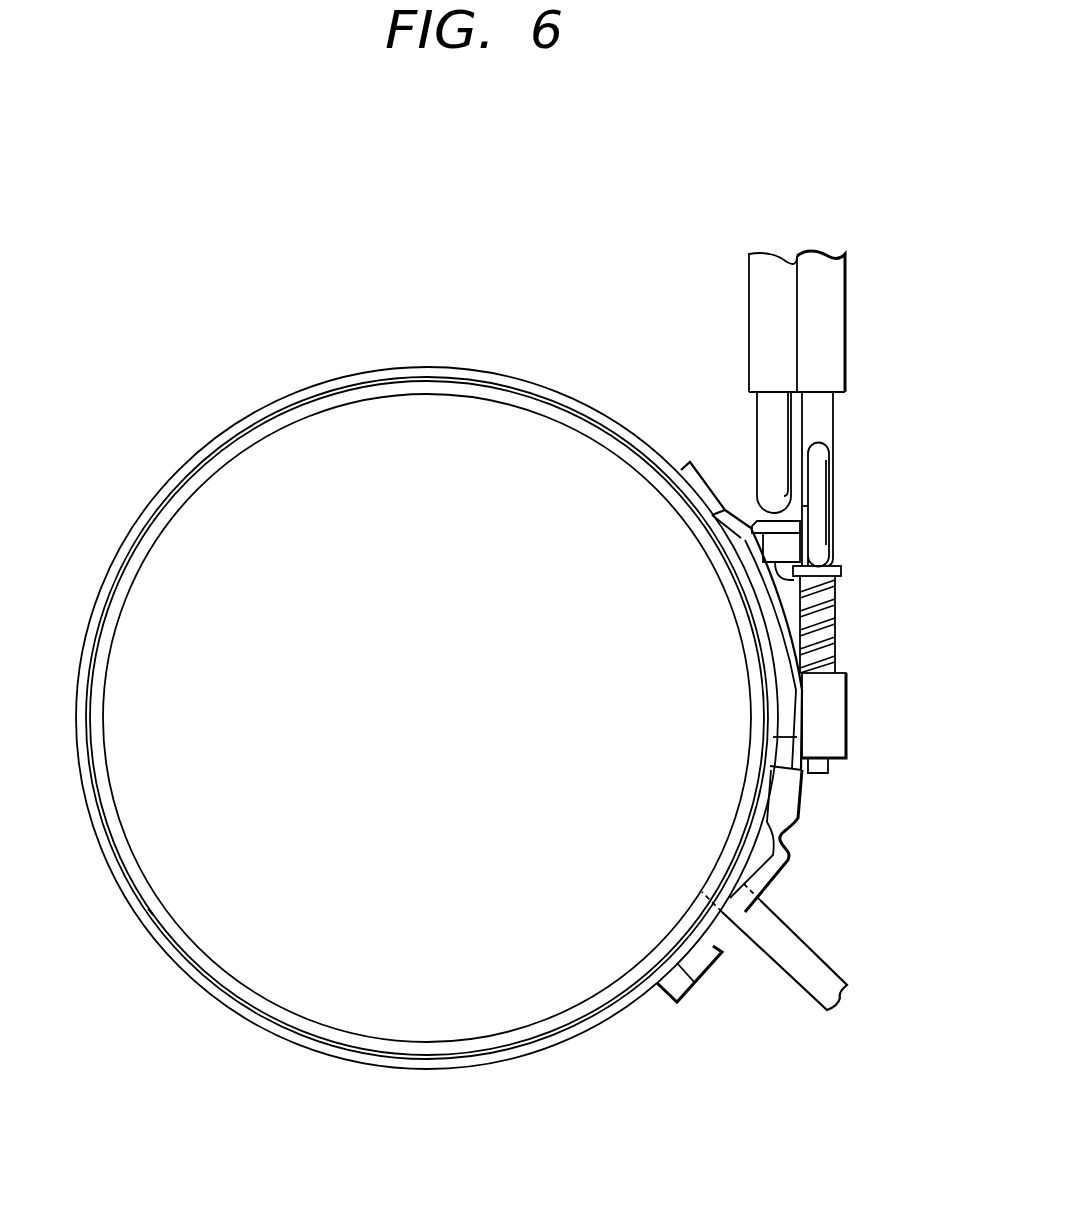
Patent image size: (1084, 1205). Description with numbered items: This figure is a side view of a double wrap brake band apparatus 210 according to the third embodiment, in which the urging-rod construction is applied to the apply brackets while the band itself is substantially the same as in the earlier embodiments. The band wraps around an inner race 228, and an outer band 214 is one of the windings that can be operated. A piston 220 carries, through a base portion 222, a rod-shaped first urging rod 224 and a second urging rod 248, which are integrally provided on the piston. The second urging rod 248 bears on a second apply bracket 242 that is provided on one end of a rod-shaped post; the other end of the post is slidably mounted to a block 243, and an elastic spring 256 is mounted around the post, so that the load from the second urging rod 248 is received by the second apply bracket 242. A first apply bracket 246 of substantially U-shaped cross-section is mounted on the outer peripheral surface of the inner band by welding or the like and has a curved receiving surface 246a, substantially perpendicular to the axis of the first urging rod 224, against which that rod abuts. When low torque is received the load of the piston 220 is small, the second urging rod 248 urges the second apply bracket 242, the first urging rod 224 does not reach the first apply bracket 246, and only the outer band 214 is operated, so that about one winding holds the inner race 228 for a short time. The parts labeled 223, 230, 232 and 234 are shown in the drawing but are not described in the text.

The double wrap brake band apparatus 210 is at (489, 292).
The outer band 214 is at (253, 417).
The piston 220 is at (797, 242).
The base portion 222 is at (845, 281).
The bracket 223 is at (749, 280).
The first urging rod 224 is at (762, 441).
The inner race 228 is at (445, 968).
The clamp band 230 is at (795, 838).
The lever 232 is at (780, 958).
The band portion 234 is at (215, 990).
The second apply bracket 242 is at (842, 572).
The block 243 is at (846, 700).
The first apply bracket 246 is at (830, 548).
The receiving surface 246a is at (810, 506).
The second urging rod 248 is at (830, 512).
The elastic spring 256 is at (836, 616).